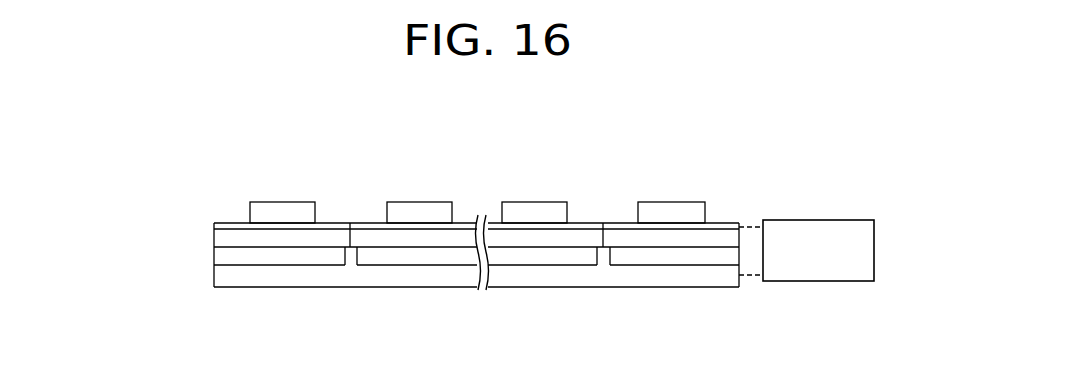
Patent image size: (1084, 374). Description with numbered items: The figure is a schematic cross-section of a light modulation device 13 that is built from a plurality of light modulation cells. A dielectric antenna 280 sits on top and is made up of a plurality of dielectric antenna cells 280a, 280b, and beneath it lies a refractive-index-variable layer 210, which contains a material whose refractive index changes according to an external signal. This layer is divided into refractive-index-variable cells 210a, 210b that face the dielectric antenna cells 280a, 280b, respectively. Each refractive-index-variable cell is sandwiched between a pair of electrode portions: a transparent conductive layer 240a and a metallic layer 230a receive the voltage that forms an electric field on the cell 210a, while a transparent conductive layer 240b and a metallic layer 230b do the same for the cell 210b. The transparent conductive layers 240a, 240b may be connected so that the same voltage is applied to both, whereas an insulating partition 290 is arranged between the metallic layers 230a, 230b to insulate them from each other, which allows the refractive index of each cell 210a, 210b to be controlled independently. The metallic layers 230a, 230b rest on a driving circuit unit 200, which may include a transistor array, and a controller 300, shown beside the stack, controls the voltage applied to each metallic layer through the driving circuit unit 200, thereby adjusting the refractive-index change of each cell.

The light modulation device 13 is at (727, 153).
The driving circuit unit 200 is at (710, 278).
The refractive-index-variable layer 210 is at (214, 238).
The refractive-index-variable cell 210a is at (231, 240).
The refractive-index-variable cell 210b is at (451, 240).
The metallic layer 230a is at (283, 258).
The metallic layer 230b is at (402, 258).
The transparent conductive layer 240a is at (333, 227).
The transparent conductive layer 240b is at (465, 227).
The dielectric antenna 280 is at (249, 209).
The dielectric antenna cell 280a is at (280, 212).
The dielectric antenna cell 280b is at (417, 210).
The insulating partition 290 is at (352, 258).
The controller 300 is at (832, 220).